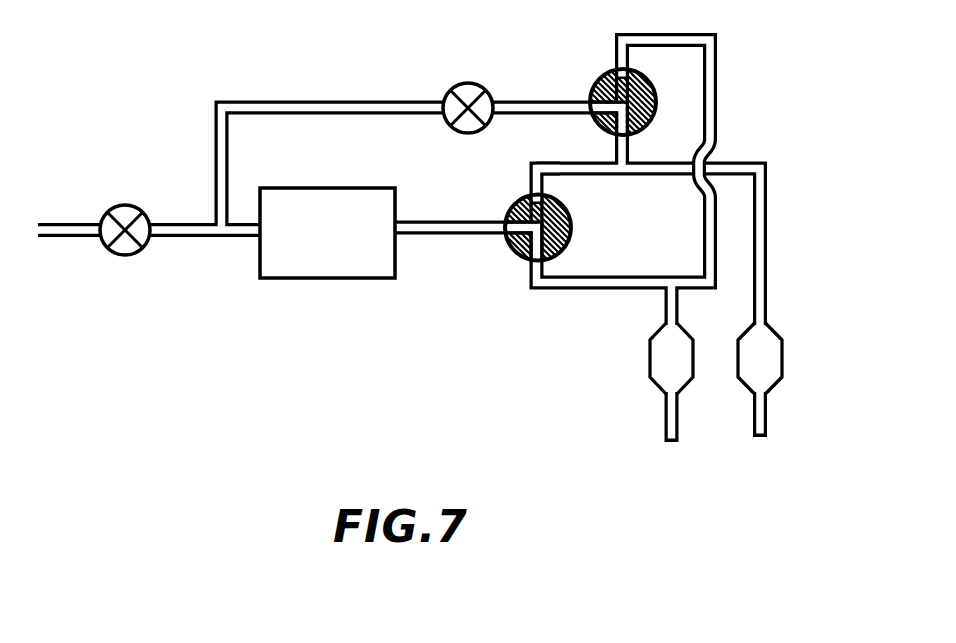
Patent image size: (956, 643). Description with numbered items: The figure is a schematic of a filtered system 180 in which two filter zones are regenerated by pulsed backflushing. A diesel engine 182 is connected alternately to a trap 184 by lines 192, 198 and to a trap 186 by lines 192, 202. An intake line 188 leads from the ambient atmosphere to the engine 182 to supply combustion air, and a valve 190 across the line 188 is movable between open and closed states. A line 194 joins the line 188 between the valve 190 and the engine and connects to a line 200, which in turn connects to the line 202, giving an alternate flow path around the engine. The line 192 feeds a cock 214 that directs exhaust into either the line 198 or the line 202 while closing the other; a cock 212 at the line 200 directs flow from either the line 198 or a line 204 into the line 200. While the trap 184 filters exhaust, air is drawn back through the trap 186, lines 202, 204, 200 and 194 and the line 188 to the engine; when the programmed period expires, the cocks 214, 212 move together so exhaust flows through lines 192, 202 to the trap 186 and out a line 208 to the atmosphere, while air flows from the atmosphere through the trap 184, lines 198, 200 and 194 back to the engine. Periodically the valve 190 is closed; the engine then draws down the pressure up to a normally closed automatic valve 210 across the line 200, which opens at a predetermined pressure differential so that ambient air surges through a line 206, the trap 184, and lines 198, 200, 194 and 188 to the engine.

The filtered system 180 is at (440, 48).
The diesel engine 182 is at (326, 281).
The trap 184 is at (660, 367).
The trap 186 is at (780, 356).
The intake line 188 is at (181, 238).
The valve 190 is at (121, 256).
The line 192 is at (441, 237).
The line 194 is at (333, 101).
The line 198 is at (557, 290).
The line 200 is at (552, 100).
The line 202 is at (598, 161).
The line 204 is at (633, 147).
The line 206 is at (678, 427).
The line 208 is at (767, 411).
The valve 210 is at (490, 72).
The valve (cock) 212 is at (677, 80).
The valve (cock) 214 is at (512, 209).